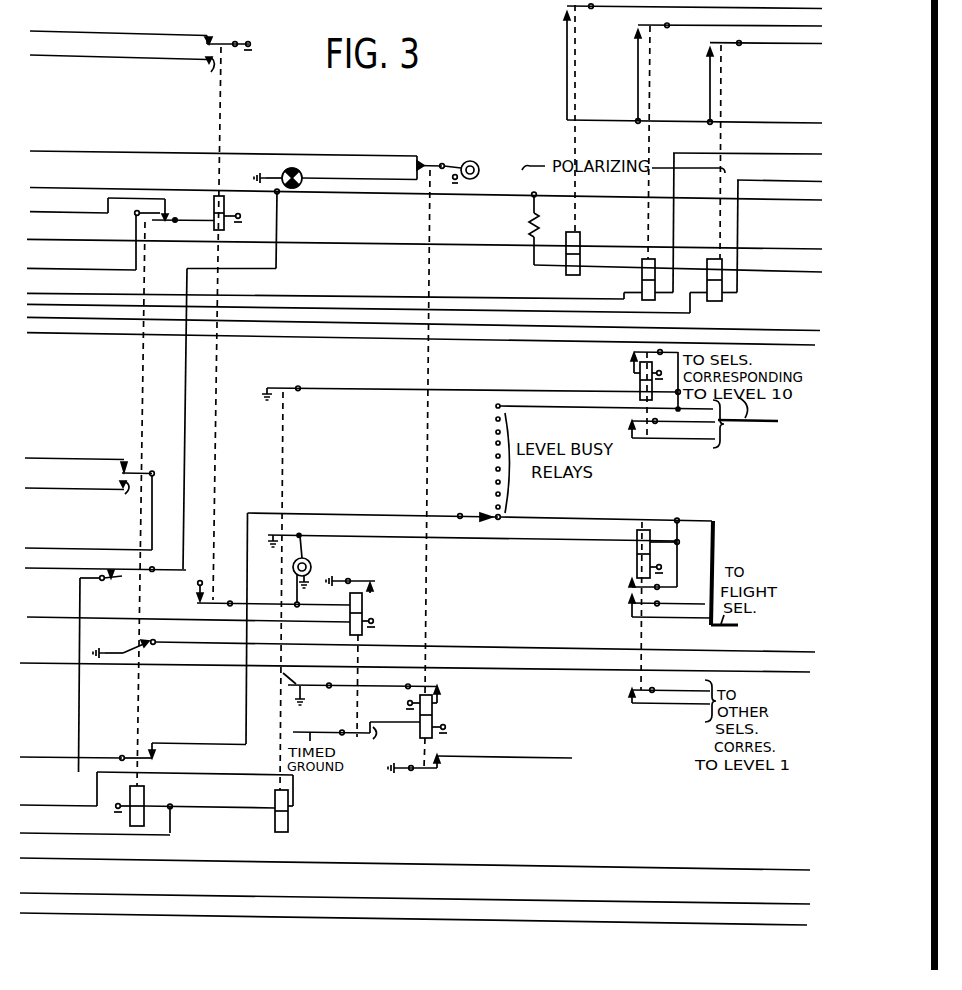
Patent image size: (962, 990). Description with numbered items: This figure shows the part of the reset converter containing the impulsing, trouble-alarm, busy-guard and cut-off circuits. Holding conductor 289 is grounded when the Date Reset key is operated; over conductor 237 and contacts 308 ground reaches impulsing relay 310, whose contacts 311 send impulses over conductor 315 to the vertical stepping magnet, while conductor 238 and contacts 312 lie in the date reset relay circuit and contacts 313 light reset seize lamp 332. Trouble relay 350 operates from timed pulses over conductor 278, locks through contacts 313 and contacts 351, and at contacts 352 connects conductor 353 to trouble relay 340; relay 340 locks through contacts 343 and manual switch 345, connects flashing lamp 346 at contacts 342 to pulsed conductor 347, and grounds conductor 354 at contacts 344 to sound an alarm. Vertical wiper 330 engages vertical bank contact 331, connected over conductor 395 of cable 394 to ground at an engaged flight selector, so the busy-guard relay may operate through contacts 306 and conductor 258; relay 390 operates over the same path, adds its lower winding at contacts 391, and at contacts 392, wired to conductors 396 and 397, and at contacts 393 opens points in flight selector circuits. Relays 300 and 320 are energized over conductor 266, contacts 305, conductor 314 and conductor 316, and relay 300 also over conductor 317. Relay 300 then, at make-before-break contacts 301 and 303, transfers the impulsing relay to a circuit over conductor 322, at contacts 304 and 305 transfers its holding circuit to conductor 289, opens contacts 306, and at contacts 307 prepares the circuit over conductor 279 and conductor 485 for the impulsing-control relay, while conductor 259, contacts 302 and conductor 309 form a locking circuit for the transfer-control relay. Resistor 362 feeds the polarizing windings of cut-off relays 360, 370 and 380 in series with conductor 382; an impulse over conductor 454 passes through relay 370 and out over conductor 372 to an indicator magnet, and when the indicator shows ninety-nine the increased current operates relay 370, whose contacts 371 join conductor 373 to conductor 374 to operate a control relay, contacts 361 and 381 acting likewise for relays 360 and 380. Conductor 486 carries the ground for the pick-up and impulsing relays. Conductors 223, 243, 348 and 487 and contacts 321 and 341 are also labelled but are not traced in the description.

The conductor 223 is at (413, 911).
The conductor 237 is at (97, 206).
The conductor 238 is at (118, 48).
The conductor 243 is at (74, 477).
The conductor 258 is at (65, 756).
The conductor 259 is at (74, 448).
The conductor 266 is at (105, 560).
The conductor 278 is at (187, 610).
The conductor 279 is at (415, 659).
The holding conductor 289 is at (426, 183).
The relay 300 is at (145, 790).
The make-before-break contacts 301 is at (143, 220).
The contacts 302 is at (130, 468).
The make-before-break contacts 303 is at (119, 497).
The make-before-break contacts 304 is at (126, 577).
The make-before-break contacts 305 is at (81, 578).
The contacts 306 is at (154, 757).
The contacts 307 is at (130, 647).
The contacts 308 is at (183, 209).
The conductor 309 is at (88, 513).
The impulsing relay 310 is at (226, 202).
The contacts 311 is at (212, 43).
The contacts 312 is at (210, 67).
The contacts 313 is at (208, 597).
The conductor 314 is at (78, 748).
The conductor 315 is at (118, 28).
The conductor 316 is at (156, 789).
The conductor 317 is at (95, 820).
The relay 320 is at (273, 828).
The contact 321 is at (278, 543).
The conductor 322 is at (81, 242).
The vertical wiper 330 is at (373, 508).
The vertical bank contact 331 is at (604, 526).
The reset seize lamp 332 is at (308, 569).
The trouble relay 340 is at (433, 721).
The contact 341 is at (422, 160).
The contacts 342 is at (417, 178).
The contacts 343 is at (438, 692).
The contacts 344 is at (443, 763).
The manually operated switch 345 is at (305, 688).
The lamp 346 is at (477, 164).
The conductor 347 is at (335, 172).
The conductor 348 is at (223, 142).
The trouble relay 350 is at (379, 614).
The contacts 351 is at (373, 588).
The contacts 352 is at (395, 738).
The conductor 353 is at (331, 724).
The conductor 354 is at (504, 749).
The cut-off relay 360 is at (580, 239).
The contacts 361 is at (563, 15).
The resistor 362 is at (532, 226).
The cut-off relay 370 is at (640, 280).
The contacts 371 is at (636, 33).
The conductor 372 is at (334, 286).
The conductor 373 is at (730, 19).
The conductor 374 is at (769, 111).
The cut-off relay 380 is at (705, 297).
The contacts 381 is at (706, 52).
The conductor 382 is at (678, 263).
The relay 390 is at (635, 552).
The contacts 391 is at (630, 580).
The contacts 392 is at (625, 612).
The contacts 393 is at (625, 700).
The cable 394 is at (727, 638).
The conductor 395 is at (703, 521).
The conductor 396 is at (670, 595).
The conductor 397 is at (703, 619).
The conductor 454 is at (769, 142).
The conductor 485 is at (485, 647).
The conductor 486 is at (415, 890).
The conductor 487 is at (415, 856).